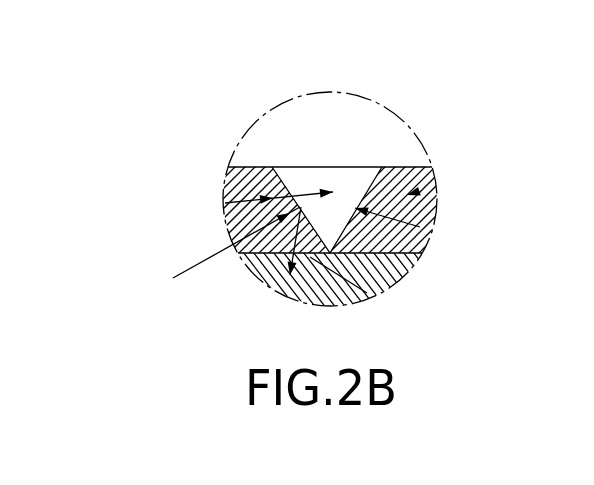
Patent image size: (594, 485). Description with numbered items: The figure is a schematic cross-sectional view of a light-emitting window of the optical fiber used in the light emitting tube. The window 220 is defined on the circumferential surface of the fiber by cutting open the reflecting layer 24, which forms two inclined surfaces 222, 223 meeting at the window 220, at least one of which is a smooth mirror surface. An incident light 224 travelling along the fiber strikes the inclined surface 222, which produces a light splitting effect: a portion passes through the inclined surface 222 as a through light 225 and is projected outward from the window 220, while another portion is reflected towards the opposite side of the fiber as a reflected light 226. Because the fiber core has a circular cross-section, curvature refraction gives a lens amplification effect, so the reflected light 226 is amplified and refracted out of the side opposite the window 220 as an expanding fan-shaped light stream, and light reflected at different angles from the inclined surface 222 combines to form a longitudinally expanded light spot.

The window 220 is at (353, 183).
The inclined surface 222 is at (225, 203).
The inclined surface 223 is at (420, 227).
The incident light 224 is at (200, 263).
The through light 225 is at (301, 207).
The reflected light 226 is at (367, 293).
The reflecting layer 24 is at (407, 195).